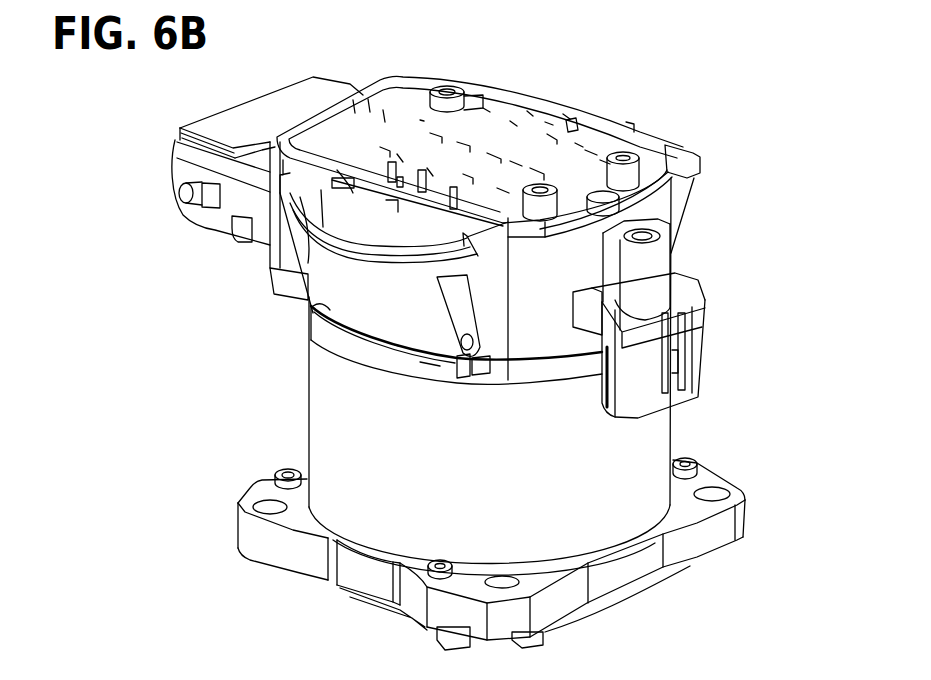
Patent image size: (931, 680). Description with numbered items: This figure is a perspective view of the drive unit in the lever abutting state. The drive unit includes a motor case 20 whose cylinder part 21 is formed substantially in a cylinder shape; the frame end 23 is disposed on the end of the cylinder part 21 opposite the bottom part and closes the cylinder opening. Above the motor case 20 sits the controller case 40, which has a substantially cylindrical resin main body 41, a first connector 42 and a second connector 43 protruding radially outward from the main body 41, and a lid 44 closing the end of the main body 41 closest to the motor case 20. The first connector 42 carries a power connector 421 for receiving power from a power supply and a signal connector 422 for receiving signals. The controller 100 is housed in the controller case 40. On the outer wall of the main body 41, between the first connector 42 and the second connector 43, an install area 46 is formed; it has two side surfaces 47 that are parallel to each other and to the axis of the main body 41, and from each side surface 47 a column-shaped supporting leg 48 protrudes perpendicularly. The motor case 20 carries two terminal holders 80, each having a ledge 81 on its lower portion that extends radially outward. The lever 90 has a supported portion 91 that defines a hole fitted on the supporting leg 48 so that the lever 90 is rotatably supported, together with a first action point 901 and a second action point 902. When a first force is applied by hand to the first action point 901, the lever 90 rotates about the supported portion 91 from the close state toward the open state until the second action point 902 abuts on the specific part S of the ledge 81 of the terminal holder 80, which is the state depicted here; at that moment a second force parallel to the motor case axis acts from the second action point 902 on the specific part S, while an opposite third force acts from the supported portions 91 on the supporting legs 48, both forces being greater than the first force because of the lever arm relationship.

The motor case 20 is at (307, 460).
The cylinder part 21 is at (308, 436).
The frame end 23 is at (240, 535).
The controller case 40 is at (663, 202).
The main body 41 is at (657, 217).
The first connector 42 is at (240, 156).
The power connector 421 is at (232, 111).
The signal connector 422 is at (300, 84).
The second connector 43 is at (676, 418).
The lid 44 is at (587, 372).
The install area 46 is at (393, 212).
The side surface 47 is at (317, 162).
The supporting leg 48 is at (473, 337).
The terminal holder 80 is at (433, 368).
The ledge 81 is at (372, 362).
The lever 90 is at (670, 136).
The supported portion 91 is at (465, 382).
The controller 100 is at (483, 113).
The first action point 901 is at (353, 190).
The second action point 902 is at (387, 333).
The specific part S is at (398, 348).